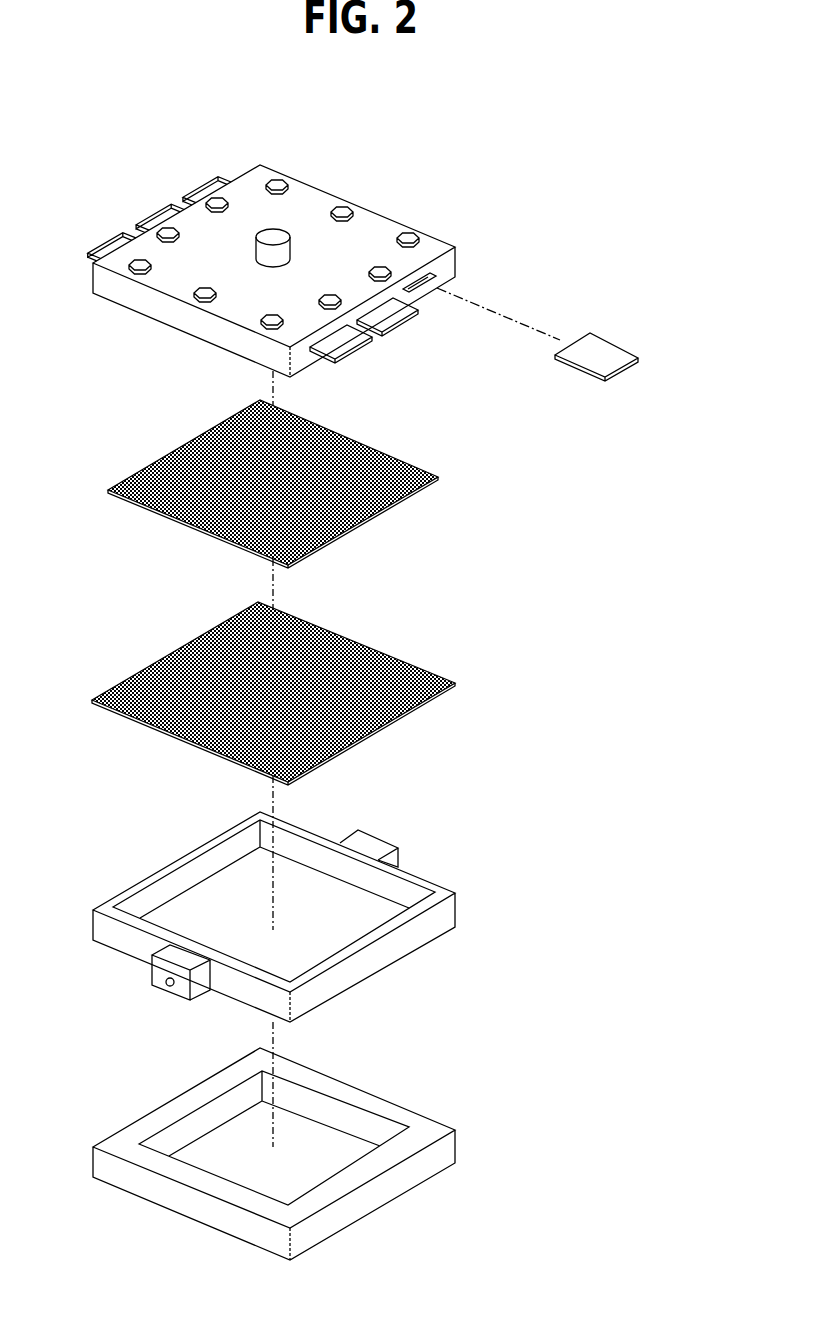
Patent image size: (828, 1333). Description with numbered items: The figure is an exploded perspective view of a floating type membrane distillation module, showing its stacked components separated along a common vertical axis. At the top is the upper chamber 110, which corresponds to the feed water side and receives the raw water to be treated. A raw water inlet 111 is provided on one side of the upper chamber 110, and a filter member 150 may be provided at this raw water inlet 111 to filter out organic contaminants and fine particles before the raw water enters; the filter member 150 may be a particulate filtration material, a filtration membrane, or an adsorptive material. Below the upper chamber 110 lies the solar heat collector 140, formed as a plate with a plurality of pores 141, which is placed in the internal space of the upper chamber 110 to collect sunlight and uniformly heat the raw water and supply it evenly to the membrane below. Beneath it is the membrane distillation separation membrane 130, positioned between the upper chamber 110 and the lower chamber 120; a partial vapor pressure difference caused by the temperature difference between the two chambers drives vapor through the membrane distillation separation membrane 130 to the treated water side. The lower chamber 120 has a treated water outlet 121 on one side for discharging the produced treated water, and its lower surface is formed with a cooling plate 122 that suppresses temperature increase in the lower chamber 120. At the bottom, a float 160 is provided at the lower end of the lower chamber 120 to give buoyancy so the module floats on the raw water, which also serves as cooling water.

The upper chamber 110 is at (315, 239).
The raw water inlet 111 is at (452, 283).
The lower chamber 120 is at (323, 921).
The treated water outlet 121 is at (163, 990).
The cooling plate 122 is at (185, 913).
The membrane distillation separation membrane 130 is at (113, 687).
The solar heat collector 140 is at (156, 435).
The pores 141 is at (408, 460).
The filter member 150 is at (627, 350).
The float 160 is at (432, 1127).